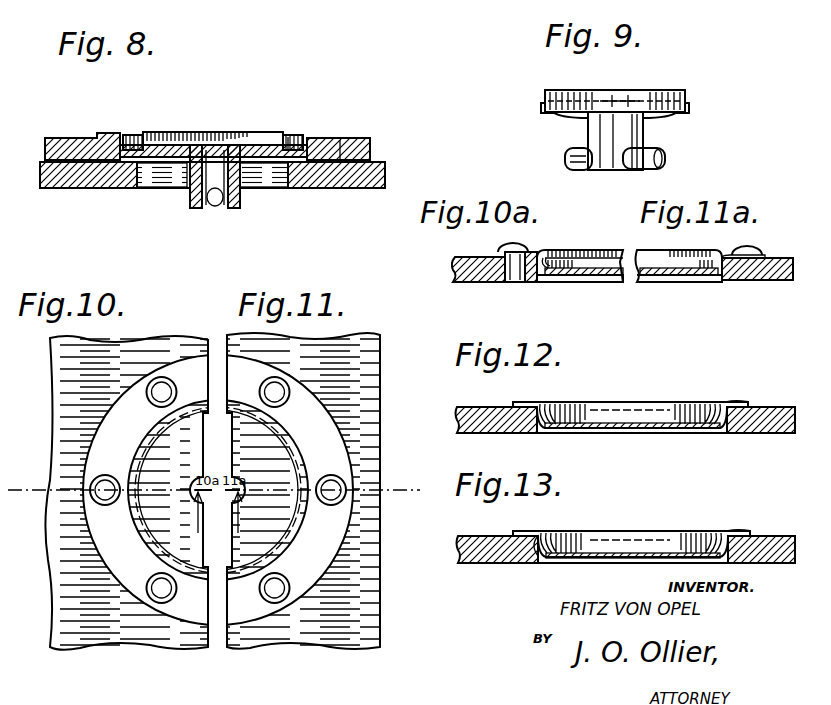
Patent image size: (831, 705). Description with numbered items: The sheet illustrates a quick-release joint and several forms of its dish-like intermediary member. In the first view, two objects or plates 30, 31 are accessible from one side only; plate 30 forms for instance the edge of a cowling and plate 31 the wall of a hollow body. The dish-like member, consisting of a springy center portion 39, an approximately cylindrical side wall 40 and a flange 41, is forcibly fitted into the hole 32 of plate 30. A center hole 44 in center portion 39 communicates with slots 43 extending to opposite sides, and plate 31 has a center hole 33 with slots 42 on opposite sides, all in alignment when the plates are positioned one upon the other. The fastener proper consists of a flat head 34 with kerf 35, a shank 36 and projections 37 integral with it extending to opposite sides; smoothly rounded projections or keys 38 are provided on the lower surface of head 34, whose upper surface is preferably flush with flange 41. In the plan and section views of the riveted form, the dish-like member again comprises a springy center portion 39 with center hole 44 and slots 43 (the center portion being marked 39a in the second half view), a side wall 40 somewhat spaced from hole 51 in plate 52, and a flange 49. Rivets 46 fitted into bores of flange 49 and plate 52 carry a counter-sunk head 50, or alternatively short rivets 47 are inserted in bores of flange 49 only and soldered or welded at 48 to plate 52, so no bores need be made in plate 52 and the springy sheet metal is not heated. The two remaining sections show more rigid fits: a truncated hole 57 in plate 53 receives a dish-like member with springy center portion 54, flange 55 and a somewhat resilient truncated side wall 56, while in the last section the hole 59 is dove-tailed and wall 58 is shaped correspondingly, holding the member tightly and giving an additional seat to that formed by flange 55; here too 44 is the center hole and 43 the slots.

In FIG. 8, the plate 30 is at (372, 150).
In FIG. 8, the plate 31 is at (384, 176).
In FIG. 8, the hole 32 is at (340, 140).
In FIG. 8, the center hole 33 is at (243, 174).
In FIG. 8, the flat head 34 is at (273, 131).
In FIG. 9, the flat head 34 is at (660, 90).
In FIG. 8, the kerf 35 is at (230, 137).
In FIG. 9, the kerf 35 is at (575, 87).
In FIG. 8, the shank 36 is at (241, 198).
In FIG. 9, the shank 36 is at (643, 135).
In FIG. 8, the projections 37 is at (209, 211).
In FIG. 9, the projections 37 is at (571, 158).
In FIG. 8, the keys 38 is at (167, 160).
In FIG. 9, the keys 38 is at (565, 115).
In FIG. 10a, the springy center portion 39 is at (572, 270).
In FIG. 10, the springy center portion 39 is at (176, 523).
In FIG. 11, the channel floor 39a is at (300, 460).
In FIG. 8, the side wall 40 is at (131, 137).
In FIG. 10a, the side wall 40 is at (548, 262).
In FIG. 8, the flange 41 is at (118, 134).
In FIG. 8, the slots 42 is at (173, 178).
In FIG. 8, the slots 43 is at (293, 132).
In FIG. 10a, the slots 43 is at (618, 270).
In FIG. 11a, the slots 43 is at (640, 283).
In FIG. 10, the slots 43 is at (206, 440).
In FIG. 11, the slots 43 is at (233, 546).
In FIG. 12, the slots 43 is at (628, 420).
In FIG. 13, the slots 43 is at (632, 553).
In FIG. 10a, the center hole 44 is at (612, 279).
In FIG. 11a, the center hole 44 is at (650, 283).
In FIG. 10, the center hole 44 is at (207, 462).
In FIG. 11, the center hole 44 is at (240, 506).
In FIG. 12, the center hole 44 is at (657, 423).
In FIG. 13, the center hole 44 is at (660, 553).
In FIG. 10a, the rivets 46 is at (492, 255).
In FIG. 10, the rivets 46 is at (105, 498).
In FIG. 11a, the short rivets 47 is at (750, 245).
In FIG. 11, the short rivets 47 is at (335, 565).
In FIG. 11a, the soldered or welded joint 48 is at (745, 262).
In FIG. 10a, the flange 49 is at (528, 253).
In FIG. 11a, the flange 49 is at (723, 257).
In FIG. 10, the flange 49 is at (125, 555).
In FIG. 11, the flange 49 is at (315, 413).
In FIG. 10a, the counter-sunk head 50 is at (508, 278).
In FIG. 10a, the hole 51 is at (540, 283).
In FIG. 10a, the plate 52 is at (455, 263).
In FIG. 11a, the plate 52 is at (780, 281).
In FIG. 10, the plate 52 is at (88, 633).
In FIG. 11, the plate 52 is at (368, 420).
In FIG. 12, the plate 53 is at (752, 433).
In FIG. 13, the plate 53 is at (481, 562).
In FIG. 12, the springy center portion 54 is at (575, 405).
In FIG. 13, the springy center portion 54 is at (585, 550).
In FIG. 12, the flange 55 is at (738, 402).
In FIG. 13, the flange 55 is at (738, 531).
In FIG. 12, the truncated side wall 56 is at (565, 428).
In FIG. 12, the truncated hole 57 is at (725, 428).
In FIG. 13, the wall 58 is at (555, 537).
In FIG. 13, the hole 59 is at (522, 557).